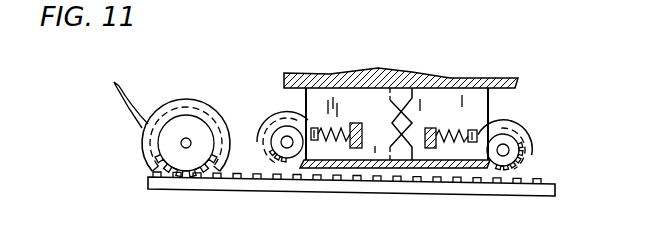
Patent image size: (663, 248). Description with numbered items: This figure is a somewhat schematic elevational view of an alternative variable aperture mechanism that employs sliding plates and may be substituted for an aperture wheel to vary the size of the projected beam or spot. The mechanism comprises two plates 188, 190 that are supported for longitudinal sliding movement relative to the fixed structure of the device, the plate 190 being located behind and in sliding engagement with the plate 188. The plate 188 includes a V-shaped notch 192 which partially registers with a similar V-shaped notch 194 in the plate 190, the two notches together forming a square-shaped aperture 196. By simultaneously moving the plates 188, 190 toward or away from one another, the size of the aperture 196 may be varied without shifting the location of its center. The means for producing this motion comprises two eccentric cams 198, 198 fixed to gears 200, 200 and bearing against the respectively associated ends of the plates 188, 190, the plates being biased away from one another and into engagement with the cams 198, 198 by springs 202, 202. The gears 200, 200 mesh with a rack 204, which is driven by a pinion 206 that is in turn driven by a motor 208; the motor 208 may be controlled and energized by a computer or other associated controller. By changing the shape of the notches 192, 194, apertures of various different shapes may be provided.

The plate 188 is at (312, 102).
The plate 190 is at (482, 84).
The V-shaped notch 192 is at (420, 86).
The V-shaped notch 194 is at (411, 88).
The square-shaped aperture 196 is at (413, 120).
The eccentric cam 198 is at (267, 133).
The gear 200 is at (259, 176).
The spring 202 is at (324, 134).
The rack 204 is at (348, 194).
The pinion 206 is at (186, 127).
The motor 208 is at (146, 146).